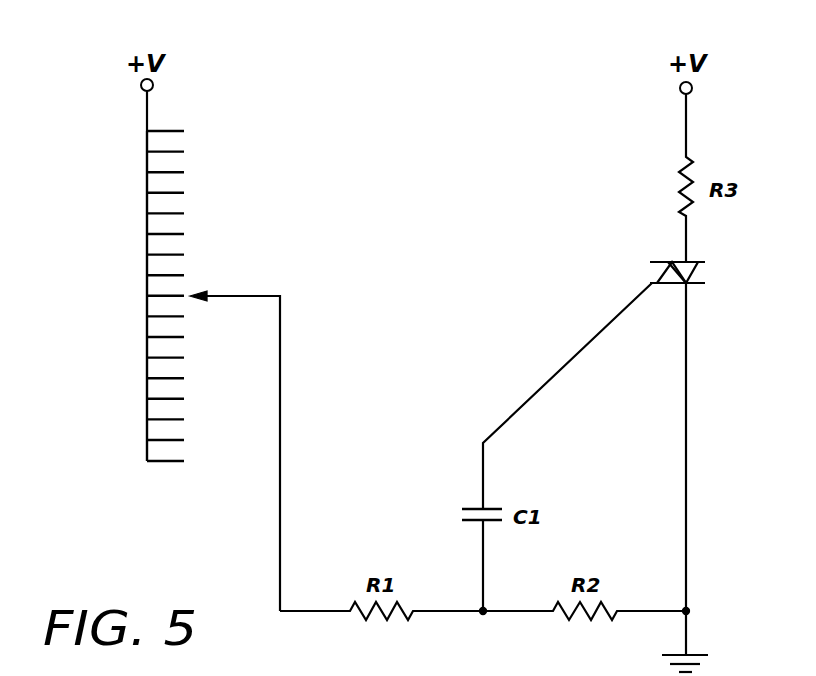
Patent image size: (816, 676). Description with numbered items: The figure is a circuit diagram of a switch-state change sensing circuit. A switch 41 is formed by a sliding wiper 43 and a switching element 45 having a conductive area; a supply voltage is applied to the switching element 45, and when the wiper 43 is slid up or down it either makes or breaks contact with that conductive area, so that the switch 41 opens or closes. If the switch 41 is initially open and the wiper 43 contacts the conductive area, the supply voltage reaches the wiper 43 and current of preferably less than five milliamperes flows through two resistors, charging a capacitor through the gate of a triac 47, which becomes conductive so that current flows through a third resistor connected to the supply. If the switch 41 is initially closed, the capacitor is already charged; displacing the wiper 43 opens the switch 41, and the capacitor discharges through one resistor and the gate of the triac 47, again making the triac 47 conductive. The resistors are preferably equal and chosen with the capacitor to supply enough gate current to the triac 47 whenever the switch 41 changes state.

The switch 41 is at (220, 477).
The wiper 43 is at (228, 293).
The switching element 45 is at (147, 183).
The triac 47 is at (703, 270).